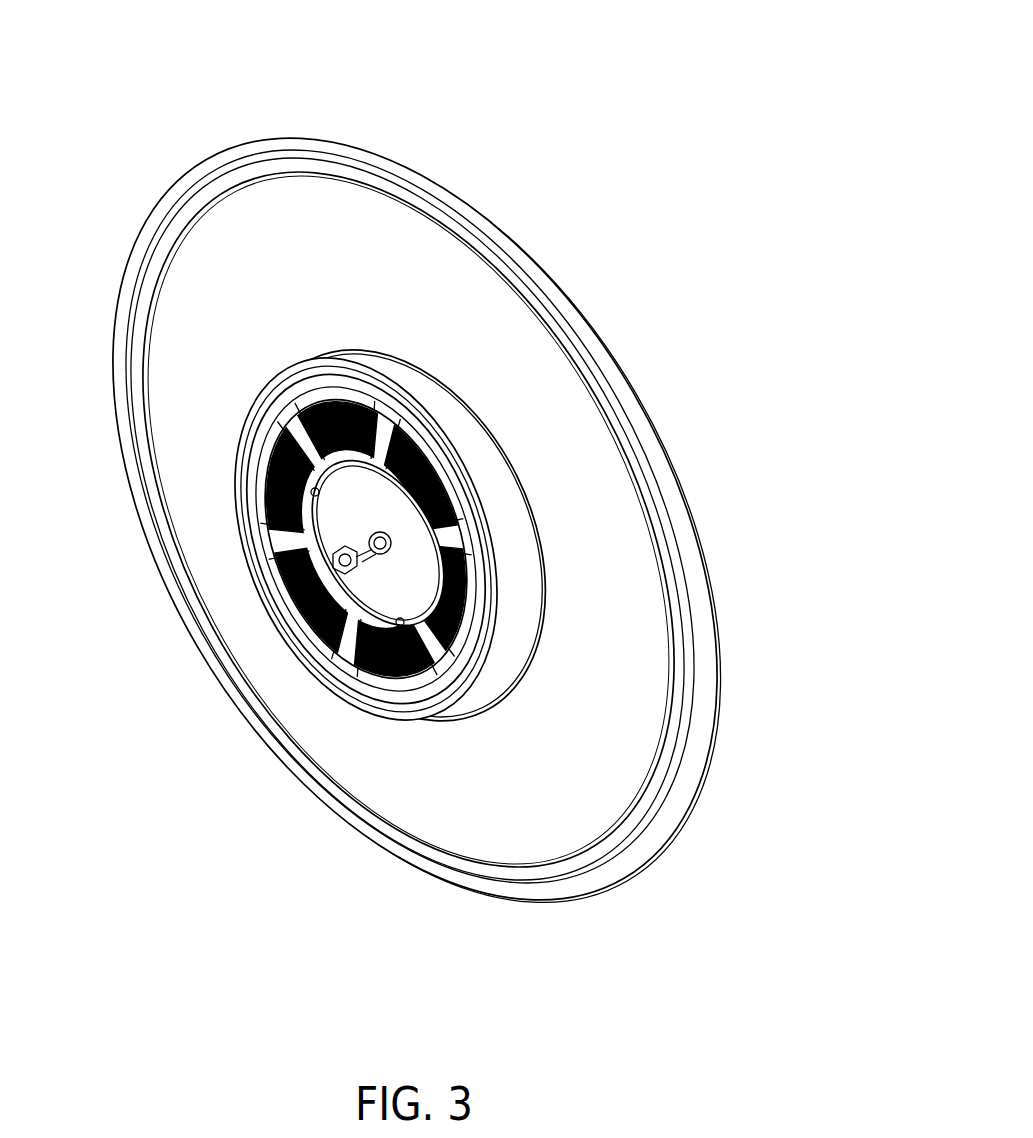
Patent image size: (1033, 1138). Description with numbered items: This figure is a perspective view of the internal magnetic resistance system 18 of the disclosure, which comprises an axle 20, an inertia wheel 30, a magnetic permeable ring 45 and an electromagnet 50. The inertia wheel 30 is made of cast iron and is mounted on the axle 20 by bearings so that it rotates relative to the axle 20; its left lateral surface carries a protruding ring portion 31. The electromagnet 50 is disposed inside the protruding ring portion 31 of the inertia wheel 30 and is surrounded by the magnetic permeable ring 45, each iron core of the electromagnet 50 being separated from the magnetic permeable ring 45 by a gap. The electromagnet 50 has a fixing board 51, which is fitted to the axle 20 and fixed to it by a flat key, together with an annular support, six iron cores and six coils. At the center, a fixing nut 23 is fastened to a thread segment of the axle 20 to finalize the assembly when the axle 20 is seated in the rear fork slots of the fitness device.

The internal magnetic resistance system 18 is at (423, 505).
The axle 20 is at (293, 533).
The fixing nut 23 is at (328, 617).
The inertia wheel 30 is at (585, 460).
The protruding ring portion 31 is at (455, 430).
The magnetic permeable ring 45 is at (273, 415).
The electromagnet 50 is at (360, 648).
The fixing board 51 is at (333, 512).